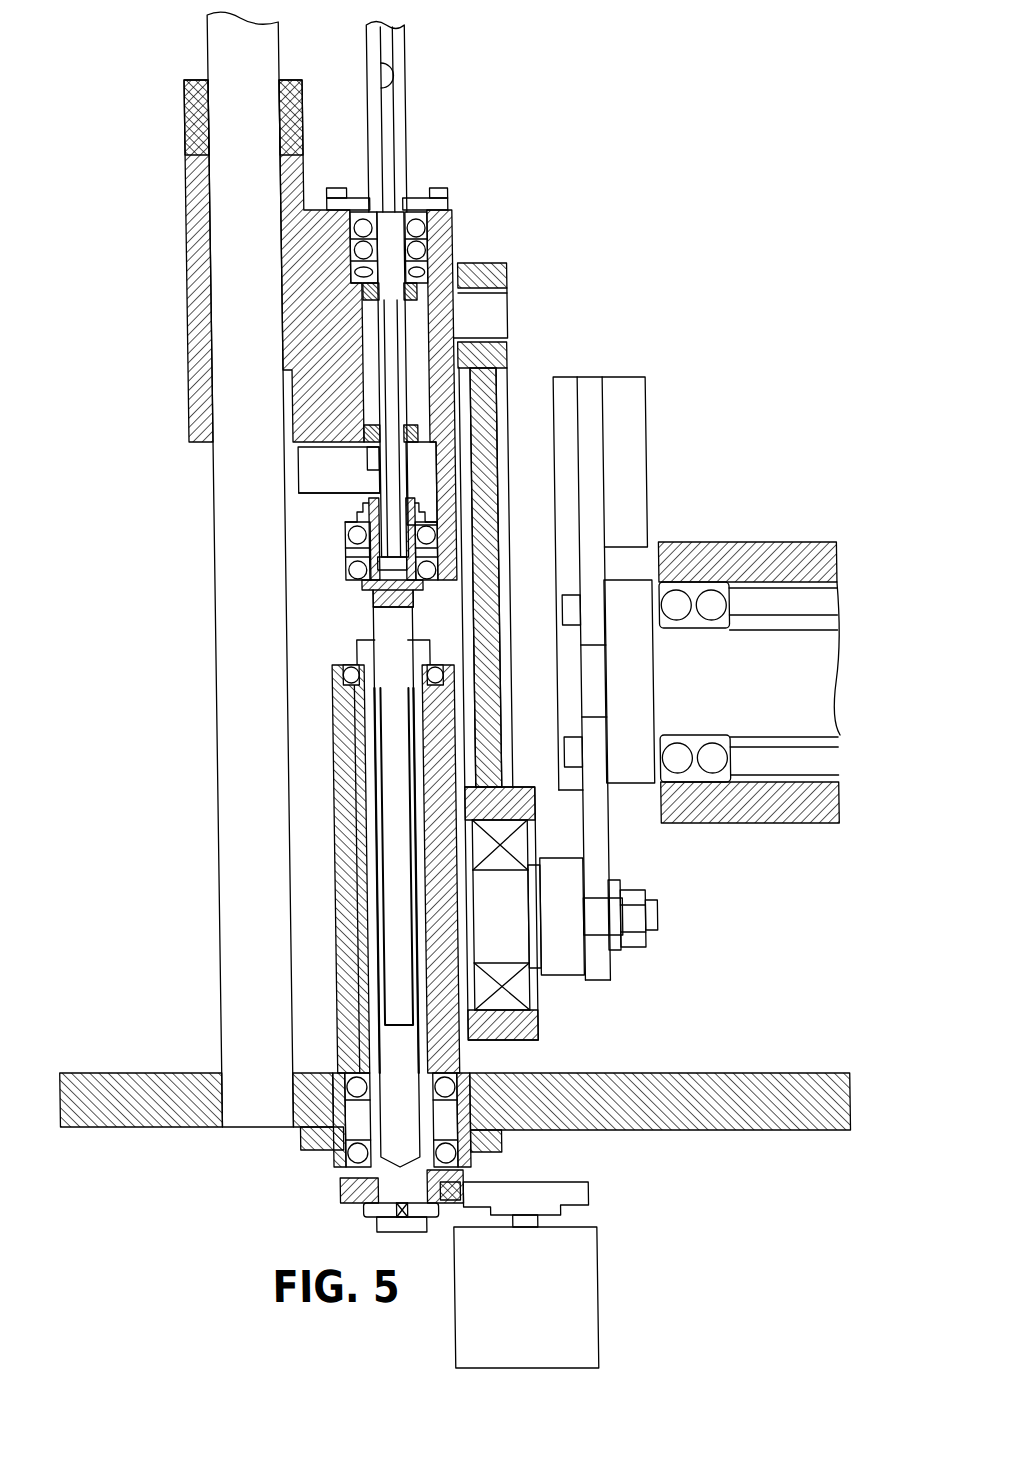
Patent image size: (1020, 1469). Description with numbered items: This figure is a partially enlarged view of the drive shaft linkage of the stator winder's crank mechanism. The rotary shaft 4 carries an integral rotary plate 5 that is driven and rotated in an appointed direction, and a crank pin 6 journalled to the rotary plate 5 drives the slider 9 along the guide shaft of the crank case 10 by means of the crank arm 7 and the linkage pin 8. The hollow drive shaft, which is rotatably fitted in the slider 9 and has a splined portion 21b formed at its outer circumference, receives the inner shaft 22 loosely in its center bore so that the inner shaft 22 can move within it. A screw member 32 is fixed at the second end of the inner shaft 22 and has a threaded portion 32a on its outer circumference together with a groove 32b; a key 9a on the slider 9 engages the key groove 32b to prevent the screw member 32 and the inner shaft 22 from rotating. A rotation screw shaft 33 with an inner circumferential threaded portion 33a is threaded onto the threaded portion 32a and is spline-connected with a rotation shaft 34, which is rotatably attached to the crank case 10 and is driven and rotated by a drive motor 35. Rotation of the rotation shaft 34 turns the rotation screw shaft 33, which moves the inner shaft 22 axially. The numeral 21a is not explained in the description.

The rotary shaft 4 is at (795, 668).
The rotary plate 5 is at (590, 437).
The crank pin 6 is at (551, 962).
The crank arm 7 is at (498, 392).
The linkage pin 8 is at (494, 317).
The slider 9 is at (189, 275).
The key 9a is at (366, 482).
The crank case 10 is at (618, 1128).
The inner tube groove 21a is at (391, 65).
The splined portion 21b is at (412, 110).
The inner shaft 22 is at (391, 157).
The screw member 32 is at (382, 512).
The threaded portion 32a is at (376, 547).
The groove 32b is at (365, 458).
The rotation screw shaft 33 is at (368, 590).
The inner circumferential threaded portion 33a is at (370, 606).
The rotation shaft 34 is at (368, 968).
The drive motor 35 is at (563, 1290).